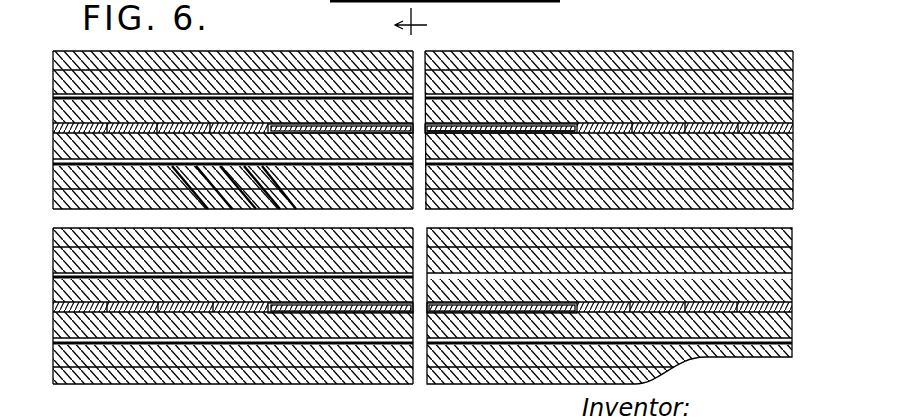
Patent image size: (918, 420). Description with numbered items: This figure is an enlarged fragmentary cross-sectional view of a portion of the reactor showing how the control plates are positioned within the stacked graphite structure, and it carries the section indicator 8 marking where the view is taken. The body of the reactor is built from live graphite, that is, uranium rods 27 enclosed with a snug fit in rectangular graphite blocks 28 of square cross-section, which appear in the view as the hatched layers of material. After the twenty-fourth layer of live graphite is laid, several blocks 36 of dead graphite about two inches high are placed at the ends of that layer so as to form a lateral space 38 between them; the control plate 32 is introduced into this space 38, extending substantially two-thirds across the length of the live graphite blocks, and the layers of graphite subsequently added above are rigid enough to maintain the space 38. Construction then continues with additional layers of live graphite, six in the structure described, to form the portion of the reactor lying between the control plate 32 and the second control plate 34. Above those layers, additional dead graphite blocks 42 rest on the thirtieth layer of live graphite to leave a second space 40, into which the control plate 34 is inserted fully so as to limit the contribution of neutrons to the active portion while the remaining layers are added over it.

The section line 8- 8 is at (421, 22).
The uranium rods 27 is at (738, 157).
The graphite blocks 28 is at (683, 85).
The control plate 32 is at (357, 310).
The control plate 34 is at (510, 128).
The blocks of dead graphite 36 is at (165, 305).
The space 38 is at (476, 306).
The space 40 is at (450, 130).
The dead graphite blocks 42 is at (227, 128).